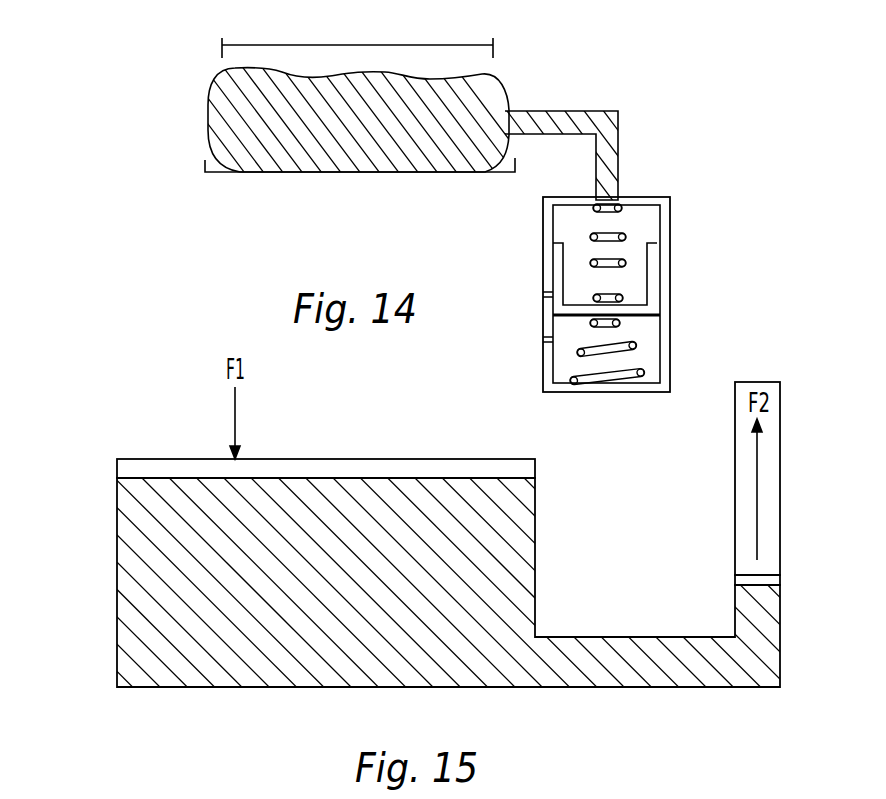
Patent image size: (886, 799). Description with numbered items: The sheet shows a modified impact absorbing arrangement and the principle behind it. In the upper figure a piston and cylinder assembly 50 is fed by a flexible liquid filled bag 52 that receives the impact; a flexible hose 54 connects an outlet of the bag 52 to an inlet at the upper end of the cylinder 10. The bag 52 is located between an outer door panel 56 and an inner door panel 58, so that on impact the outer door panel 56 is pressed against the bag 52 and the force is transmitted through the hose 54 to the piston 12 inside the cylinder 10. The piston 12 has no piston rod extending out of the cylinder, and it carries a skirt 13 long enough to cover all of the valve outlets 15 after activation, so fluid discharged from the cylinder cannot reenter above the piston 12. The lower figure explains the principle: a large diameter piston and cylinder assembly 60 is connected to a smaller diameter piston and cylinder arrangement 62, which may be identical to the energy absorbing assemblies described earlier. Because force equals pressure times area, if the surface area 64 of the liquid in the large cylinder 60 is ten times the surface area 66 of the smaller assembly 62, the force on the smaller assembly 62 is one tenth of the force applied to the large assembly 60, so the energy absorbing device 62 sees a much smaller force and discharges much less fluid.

In FIG. 14, the cylinder 10 is at (672, 223).
In FIG. 14, the piston 12 is at (640, 318).
In FIG. 14, the skirt 13 is at (650, 275).
In FIG. 14, the valve outlets 15 is at (545, 296).
In FIG. 14, the piston and cylinder assembly 50 is at (531, 272).
In FIG. 14, the flexible liquid filled bag 52 is at (207, 113).
In FIG. 14, the flexible hose 54 is at (580, 112).
In FIG. 14, the outer door panel 56 is at (445, 44).
In FIG. 14, the inner door panel 58 is at (307, 175).
In FIG. 15, the large diameter piston and cylinder assembly 60 is at (118, 467).
In FIG. 15, the smaller diameter piston and cylinder arrangement 62 is at (735, 496).
In FIG. 15, the surface area of the liquid in the cylinder 64 is at (445, 458).
In FIG. 15, the surface area of the smaller piston and cylinder assembly 66 is at (776, 580).